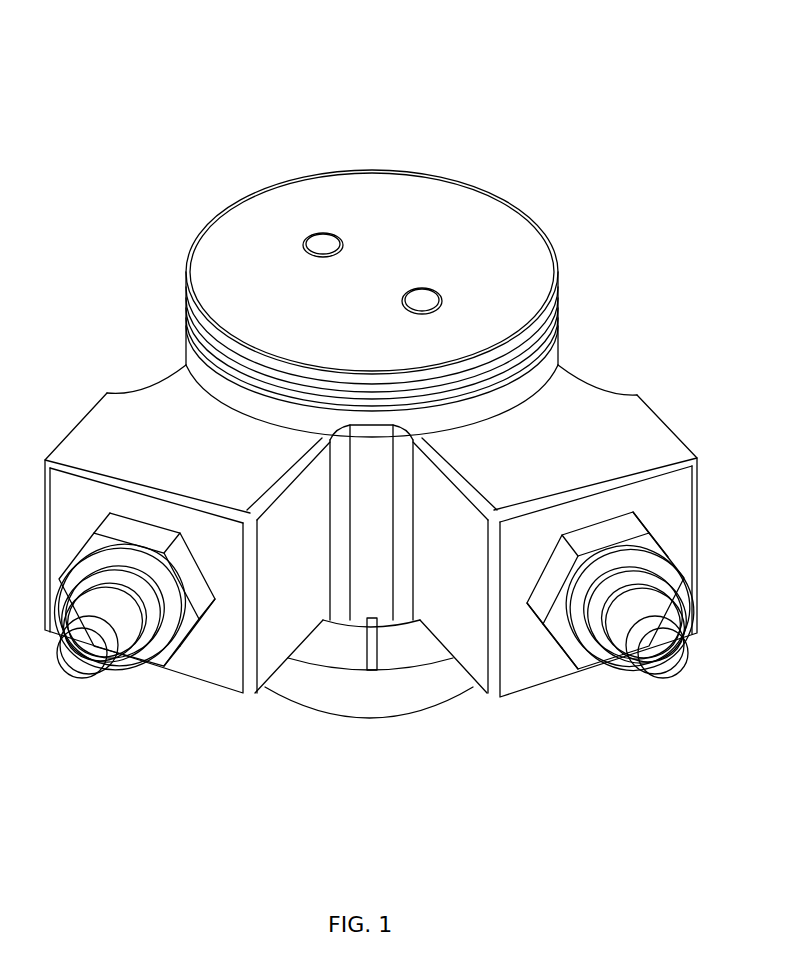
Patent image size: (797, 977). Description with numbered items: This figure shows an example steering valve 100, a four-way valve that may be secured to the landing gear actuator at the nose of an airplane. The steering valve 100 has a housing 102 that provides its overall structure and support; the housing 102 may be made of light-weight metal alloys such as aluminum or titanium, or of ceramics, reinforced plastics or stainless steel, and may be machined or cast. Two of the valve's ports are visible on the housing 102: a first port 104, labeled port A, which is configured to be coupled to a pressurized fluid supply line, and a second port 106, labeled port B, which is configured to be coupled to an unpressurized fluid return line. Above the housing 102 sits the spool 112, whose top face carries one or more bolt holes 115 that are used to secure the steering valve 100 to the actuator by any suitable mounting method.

The steering valve 100 is at (130, 101).
The housing 102 is at (617, 393).
The first port 104 is at (56, 636).
The second port 106 is at (640, 667).
The spool 112 is at (400, 172).
The bolt holes 115 is at (414, 302).